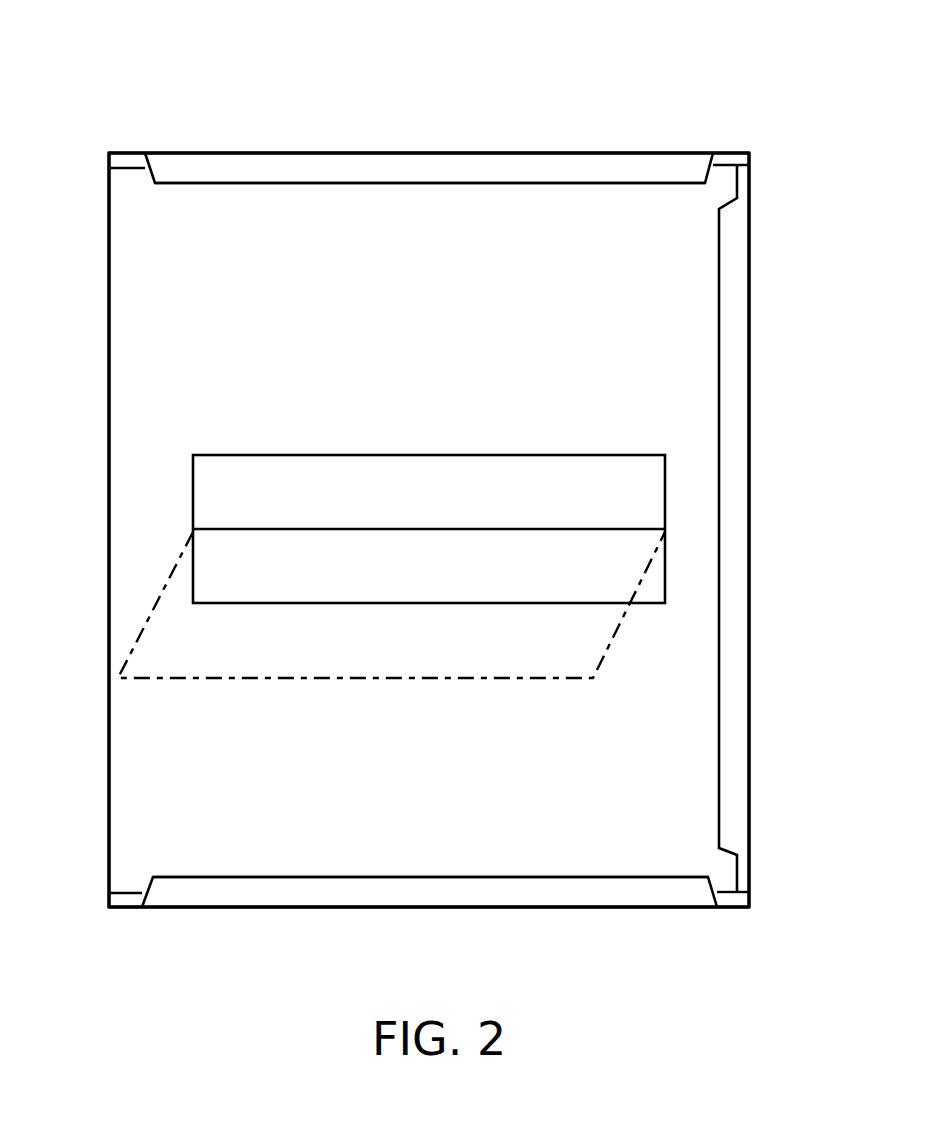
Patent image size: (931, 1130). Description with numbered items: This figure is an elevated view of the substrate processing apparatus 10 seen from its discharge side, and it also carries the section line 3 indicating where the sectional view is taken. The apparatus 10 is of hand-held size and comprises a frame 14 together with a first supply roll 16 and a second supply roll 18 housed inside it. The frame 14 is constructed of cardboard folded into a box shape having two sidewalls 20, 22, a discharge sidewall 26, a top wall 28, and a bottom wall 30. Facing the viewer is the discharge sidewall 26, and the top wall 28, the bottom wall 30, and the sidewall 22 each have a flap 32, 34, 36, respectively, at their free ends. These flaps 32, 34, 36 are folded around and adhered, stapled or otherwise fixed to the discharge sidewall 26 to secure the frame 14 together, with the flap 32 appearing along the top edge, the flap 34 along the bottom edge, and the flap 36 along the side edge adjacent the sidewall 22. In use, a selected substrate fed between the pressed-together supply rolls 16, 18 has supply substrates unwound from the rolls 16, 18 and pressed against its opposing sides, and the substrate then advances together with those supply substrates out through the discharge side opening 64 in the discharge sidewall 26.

The section line 3- 3 is at (390, 532).
The substrate processing apparatus 10 is at (722, 82).
The frame 14 is at (98, 126).
The first supply roll 16 is at (585, 573).
The second supply roll 18 is at (568, 475).
The sidewall 20 is at (108, 430).
The sidewall 22 is at (751, 424).
The discharge sidewall 26 is at (556, 315).
The top wall 28 is at (543, 150).
The bottom wall 30 is at (602, 908).
The flap 32 is at (575, 168).
The flap 34 is at (578, 885).
The flap 36 is at (737, 662).
The discharge side opening 64 is at (308, 482).